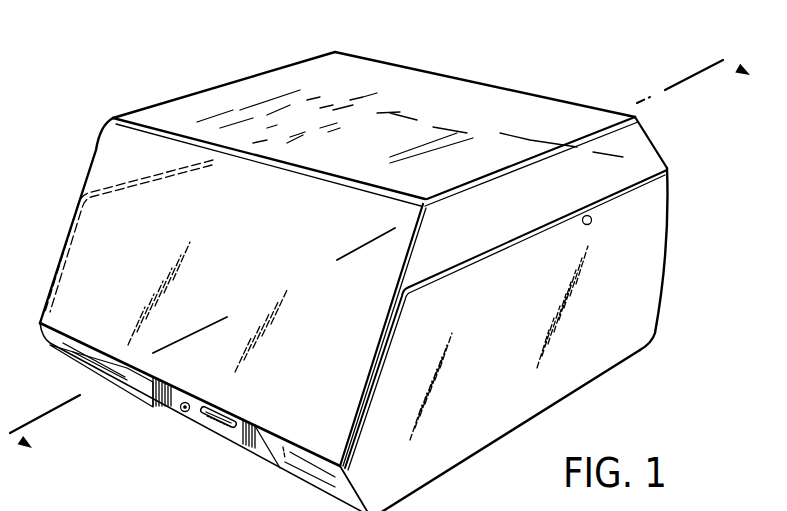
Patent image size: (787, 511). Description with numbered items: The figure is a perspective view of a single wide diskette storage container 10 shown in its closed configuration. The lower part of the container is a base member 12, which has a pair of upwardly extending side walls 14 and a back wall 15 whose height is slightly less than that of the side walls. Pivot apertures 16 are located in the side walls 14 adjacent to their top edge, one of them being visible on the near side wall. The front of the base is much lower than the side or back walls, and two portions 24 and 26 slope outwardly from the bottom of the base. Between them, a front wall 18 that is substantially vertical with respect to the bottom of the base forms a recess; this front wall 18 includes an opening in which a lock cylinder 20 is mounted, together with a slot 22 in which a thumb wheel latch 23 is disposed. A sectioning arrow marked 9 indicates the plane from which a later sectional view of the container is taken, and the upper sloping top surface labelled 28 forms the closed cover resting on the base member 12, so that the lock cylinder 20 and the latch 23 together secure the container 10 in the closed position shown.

The section line 9- 9 is at (391, 264).
The diskette storage container 10 is at (397, 255).
The base member 12 is at (570, 339).
The side walls 14 is at (618, 351).
The back wall 15 is at (536, 293).
The pivot apertures 16 is at (596, 218).
The front wall 18 is at (194, 452).
The lock cylinder 20 is at (180, 410).
The slot 22 is at (229, 428).
The thumb wheel latch 23 is at (217, 428).
The sloping portion 24 is at (93, 368).
The sloping portion 26 is at (310, 477).
The top wall 28 is at (210, 103).